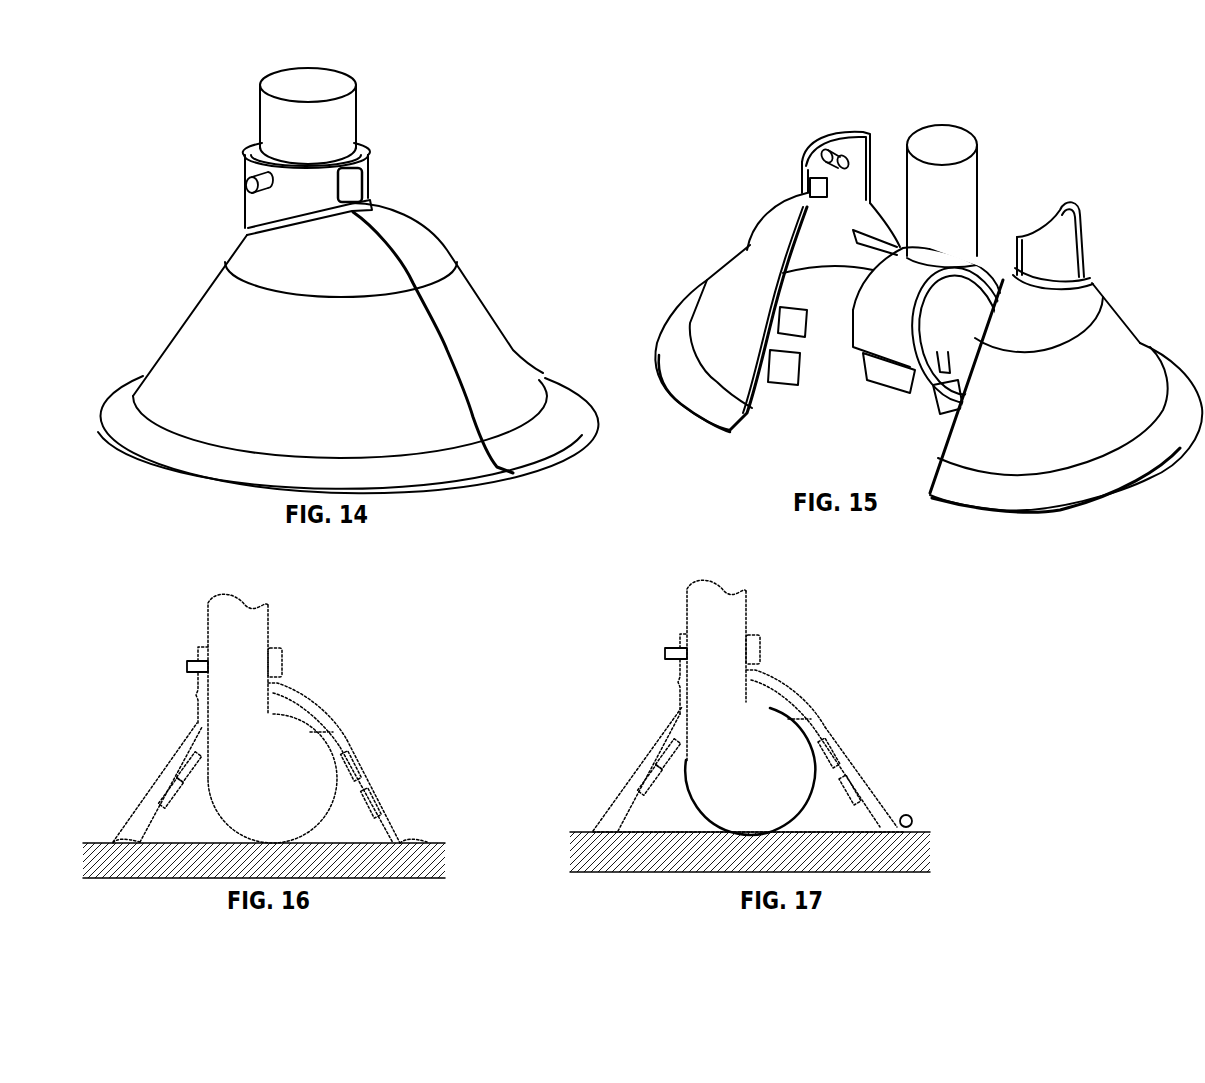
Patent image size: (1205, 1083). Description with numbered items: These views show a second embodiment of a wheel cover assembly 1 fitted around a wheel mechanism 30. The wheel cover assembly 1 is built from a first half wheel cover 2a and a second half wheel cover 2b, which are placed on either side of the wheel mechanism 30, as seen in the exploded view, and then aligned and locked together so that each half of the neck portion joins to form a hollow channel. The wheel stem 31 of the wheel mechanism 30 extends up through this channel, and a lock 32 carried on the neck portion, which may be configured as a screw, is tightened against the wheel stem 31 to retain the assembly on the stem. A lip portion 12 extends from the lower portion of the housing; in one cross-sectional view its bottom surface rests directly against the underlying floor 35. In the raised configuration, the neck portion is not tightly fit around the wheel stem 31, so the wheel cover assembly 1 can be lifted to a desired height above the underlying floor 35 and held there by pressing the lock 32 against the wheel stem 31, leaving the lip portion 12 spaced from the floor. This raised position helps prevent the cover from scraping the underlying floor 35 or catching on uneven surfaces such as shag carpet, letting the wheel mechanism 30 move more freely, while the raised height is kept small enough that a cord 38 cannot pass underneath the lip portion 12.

In FIG. 14, the wheel cover assembly 1 is at (195, 298).
In FIG. 16, the wheel cover assembly 1 is at (387, 798).
In FIG. 17, the wheel cover assembly 1 is at (865, 787).
In FIG. 15, the first half wheel cover 2a is at (760, 215).
In FIG. 15, the second half wheel cover 2b is at (1113, 308).
In FIG. 14, the lip portion 12 is at (96, 398).
In FIG. 17, the lip portion 12 is at (593, 830).
In FIG. 15, the wheel mechanism 30 is at (987, 268).
In FIG. 16, the wheel mechanism 30 is at (275, 713).
In FIG. 17, the wheel mechanism 30 is at (753, 698).
In FIG. 14, the wheel stem 31 is at (318, 75).
In FIG. 15, the wheel stem 31 is at (943, 138).
In FIG. 16, the wheel stem 31 is at (240, 615).
In FIG. 17, the wheel stem 31 is at (718, 600).
In FIG. 14, the lock 32 is at (245, 188).
In FIG. 15, the lock 32 is at (837, 150).
In FIG. 16, the lock 32 is at (187, 667).
In FIG. 17, the lock 32 is at (667, 653).
In FIG. 16, the underlying floor 35 is at (432, 867).
In FIG. 17, the underlying floor 35 is at (922, 852).
In FIG. 17, the cord 38 is at (909, 816).